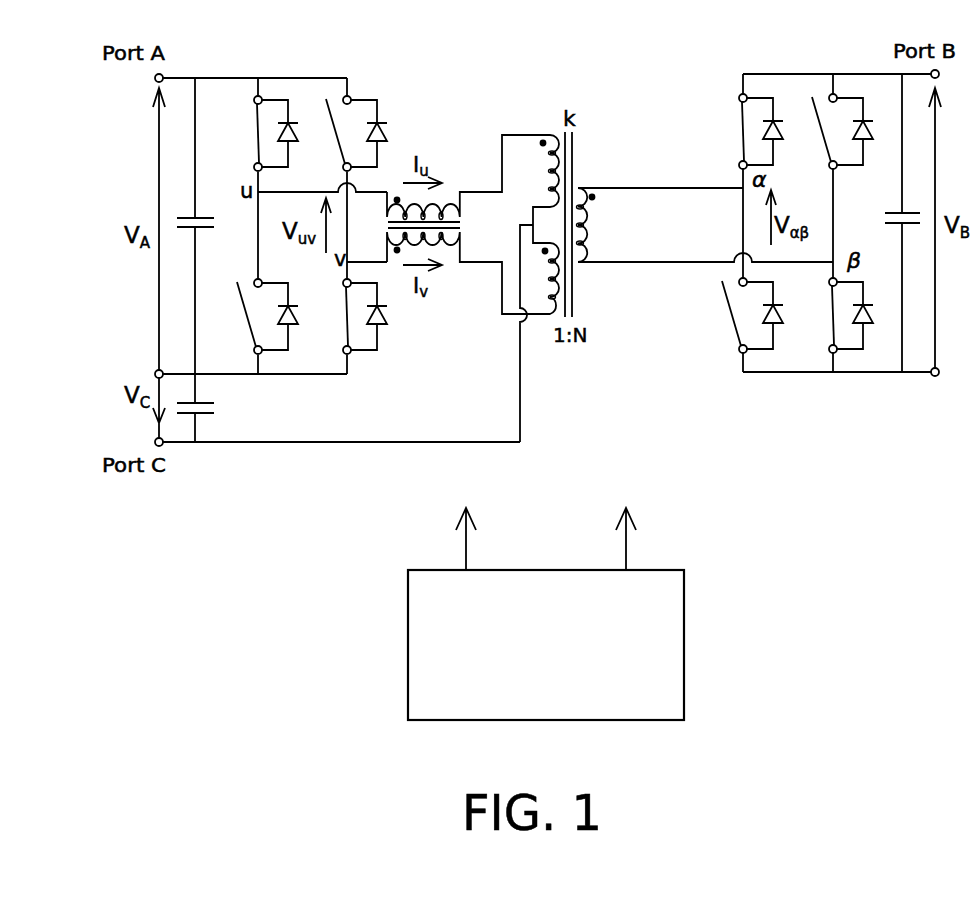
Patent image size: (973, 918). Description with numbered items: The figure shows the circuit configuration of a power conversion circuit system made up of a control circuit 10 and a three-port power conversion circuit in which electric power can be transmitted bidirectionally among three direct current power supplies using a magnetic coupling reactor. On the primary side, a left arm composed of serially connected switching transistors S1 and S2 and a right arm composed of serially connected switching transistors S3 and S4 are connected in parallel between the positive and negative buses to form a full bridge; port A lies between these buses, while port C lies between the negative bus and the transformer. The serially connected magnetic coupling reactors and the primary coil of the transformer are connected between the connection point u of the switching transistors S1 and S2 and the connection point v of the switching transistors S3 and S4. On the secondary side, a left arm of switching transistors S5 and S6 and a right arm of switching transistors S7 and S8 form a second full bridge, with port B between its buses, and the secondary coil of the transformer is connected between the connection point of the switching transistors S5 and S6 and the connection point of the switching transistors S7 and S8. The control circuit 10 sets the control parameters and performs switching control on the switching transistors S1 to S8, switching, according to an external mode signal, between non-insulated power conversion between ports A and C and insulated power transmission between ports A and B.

The control circuit 10 is at (684, 625).
The switching transistor S1 is at (259, 133).
The switching transistor S2 is at (257, 316).
The switching transistor S3 is at (345, 133).
The switching transistor S4 is at (348, 316).
The switching transistor S5 is at (743, 131).
The switching transistor S6 is at (740, 315).
The switching transistor S7 is at (830, 131).
The switching transistor S8 is at (835, 315).